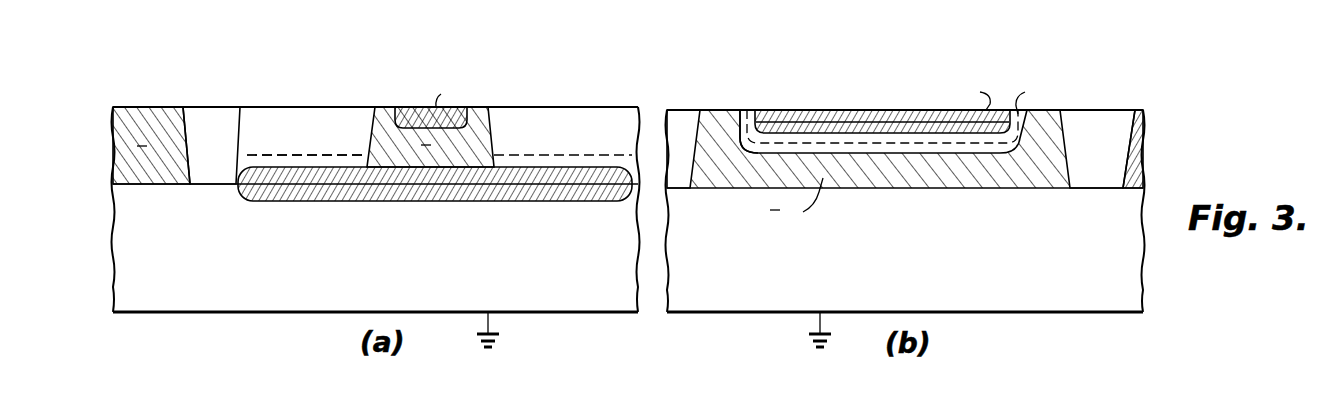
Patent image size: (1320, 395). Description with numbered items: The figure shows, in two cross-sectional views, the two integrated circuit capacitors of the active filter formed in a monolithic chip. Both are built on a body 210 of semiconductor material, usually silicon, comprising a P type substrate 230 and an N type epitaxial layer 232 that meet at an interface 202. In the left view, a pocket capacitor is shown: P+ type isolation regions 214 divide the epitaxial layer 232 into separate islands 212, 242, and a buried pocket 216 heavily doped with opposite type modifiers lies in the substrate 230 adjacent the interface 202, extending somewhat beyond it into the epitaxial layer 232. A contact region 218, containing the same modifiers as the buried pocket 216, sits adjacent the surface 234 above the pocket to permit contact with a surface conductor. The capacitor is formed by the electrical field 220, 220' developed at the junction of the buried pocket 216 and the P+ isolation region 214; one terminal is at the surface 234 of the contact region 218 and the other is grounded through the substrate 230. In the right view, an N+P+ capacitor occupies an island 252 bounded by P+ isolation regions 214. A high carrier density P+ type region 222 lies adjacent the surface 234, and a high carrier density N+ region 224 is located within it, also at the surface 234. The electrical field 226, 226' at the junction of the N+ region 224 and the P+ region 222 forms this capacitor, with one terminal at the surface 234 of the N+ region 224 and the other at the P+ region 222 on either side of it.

The interface 202 is at (182, 186).
The body of semiconductor material 210 is at (219, 302).
The island 212 is at (475, 115).
The P+ type isolation region 214 is at (215, 117).
The buried pocket 216 is at (554, 195).
The contact region 218 is at (436, 109).
The electrical field 220 is at (439, 140).
The electrical field 220' is at (307, 153).
The P+ type region 222 is at (953, 146).
The N+ region 224 is at (871, 112).
The electrical field 226 is at (882, 108).
The electrical field 226' is at (730, 147).
The substrate 230 is at (393, 243).
The epitaxial layer 232 is at (579, 145).
The surface 234 is at (307, 109).
The island 242 is at (154, 105).
The island 252 is at (718, 115).